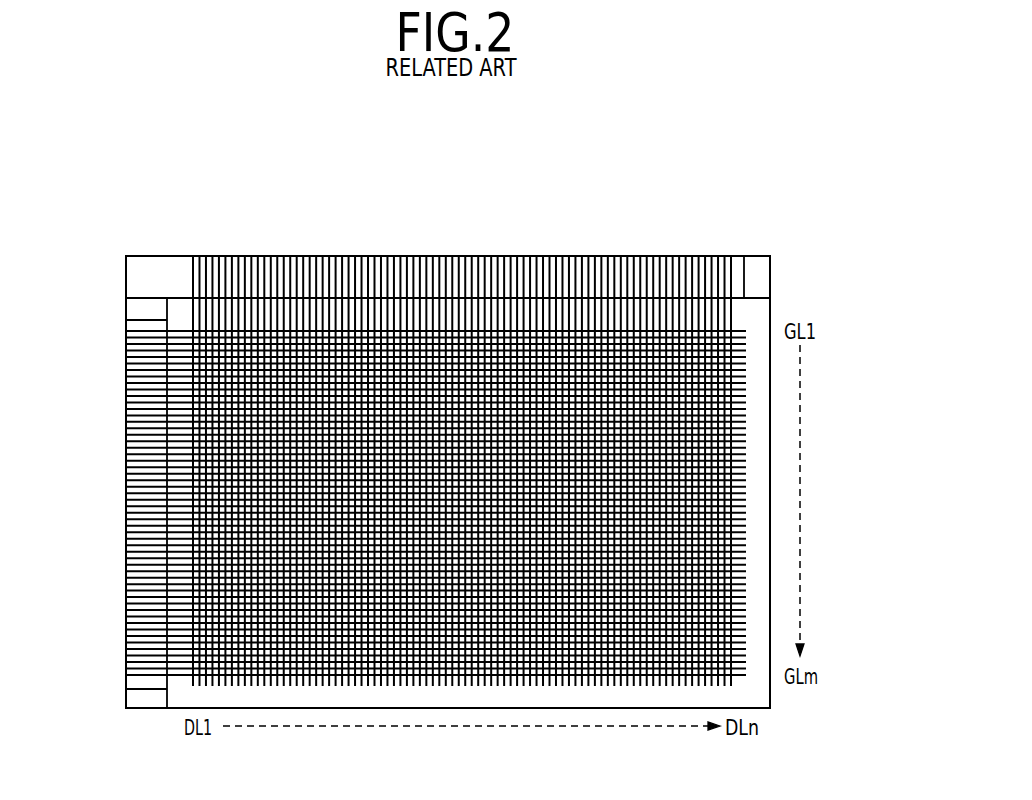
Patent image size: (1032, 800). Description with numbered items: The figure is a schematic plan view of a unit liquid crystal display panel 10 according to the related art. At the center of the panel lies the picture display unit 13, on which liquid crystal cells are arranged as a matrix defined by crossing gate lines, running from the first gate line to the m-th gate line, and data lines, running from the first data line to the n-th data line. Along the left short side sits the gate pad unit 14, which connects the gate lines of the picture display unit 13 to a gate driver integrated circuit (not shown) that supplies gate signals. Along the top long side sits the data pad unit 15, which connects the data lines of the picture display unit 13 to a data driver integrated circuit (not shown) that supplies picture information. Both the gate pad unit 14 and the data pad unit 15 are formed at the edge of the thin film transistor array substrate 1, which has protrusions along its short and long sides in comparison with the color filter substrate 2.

The thin film transistor array substrate 1 is at (142, 266).
The color filter substrate 2 is at (177, 303).
The unit liquid crystal display panel 10 is at (780, 693).
The picture display unit 13 is at (455, 482).
The gate pad unit 14 is at (106, 681).
The data pad unit 15 is at (736, 239).